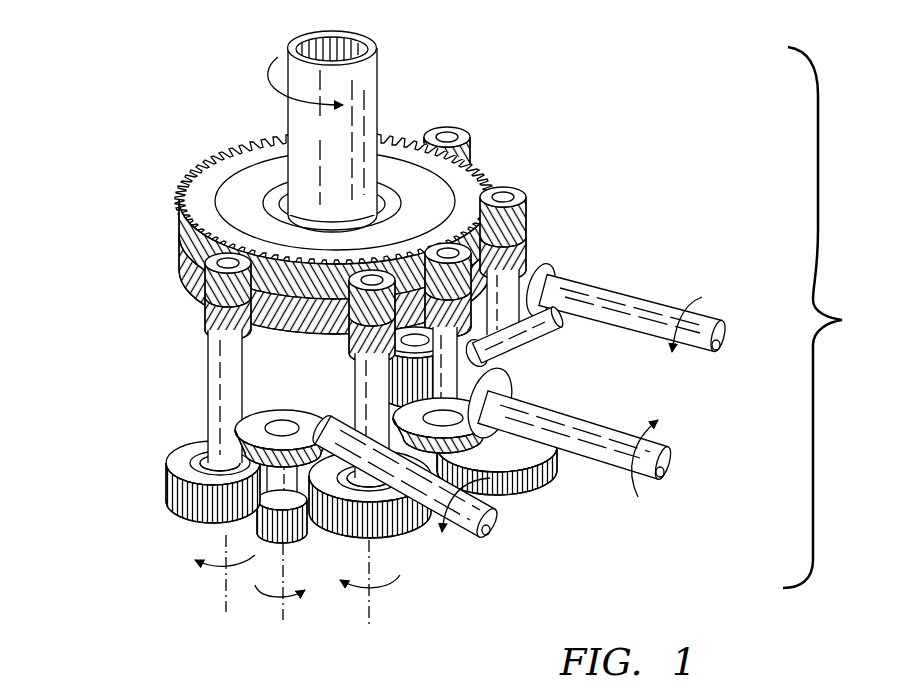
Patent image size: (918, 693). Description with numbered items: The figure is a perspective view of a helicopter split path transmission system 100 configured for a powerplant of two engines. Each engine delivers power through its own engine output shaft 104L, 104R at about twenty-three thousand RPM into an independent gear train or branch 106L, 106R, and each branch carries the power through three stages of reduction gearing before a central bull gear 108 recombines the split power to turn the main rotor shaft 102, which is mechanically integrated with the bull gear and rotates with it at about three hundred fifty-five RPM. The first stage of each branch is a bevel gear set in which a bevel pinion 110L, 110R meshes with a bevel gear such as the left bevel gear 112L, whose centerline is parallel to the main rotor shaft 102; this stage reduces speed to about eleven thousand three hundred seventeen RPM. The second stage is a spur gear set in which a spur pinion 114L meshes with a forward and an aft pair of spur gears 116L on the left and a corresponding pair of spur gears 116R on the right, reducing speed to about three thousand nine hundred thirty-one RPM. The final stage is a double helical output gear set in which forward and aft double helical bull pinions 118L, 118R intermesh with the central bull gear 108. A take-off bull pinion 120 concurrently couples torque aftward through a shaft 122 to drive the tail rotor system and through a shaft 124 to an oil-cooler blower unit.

The split path transmission system 100 is at (837, 317).
The main rotor shaft 102 is at (377, 78).
The left engine output shaft 104L is at (473, 528).
The right engine output shaft 104R is at (615, 300).
The left gear train branch 106L is at (133, 495).
The right gear train branch 106R is at (584, 157).
The central bull gear 108 is at (208, 168).
The left bevel pinion 110L is at (283, 405).
The right bevel pinion 110R is at (553, 262).
The left bevel gear 112L is at (232, 428).
The left spur pinion 114L is at (277, 530).
The left spur gears (forward and aft) 116L is at (423, 600).
The right spur gears (forward and aft) 116R is at (547, 402).
The left double helical bull pinions (forward and aft) 118L is at (350, 344).
The right double helical bull pinions (forward and aft) 118R is at (458, 127).
The take-off bull pinion 120 is at (493, 468).
The tail rotor shaft 122 is at (605, 458).
The oil-cooler blower shaft 124 is at (522, 338).